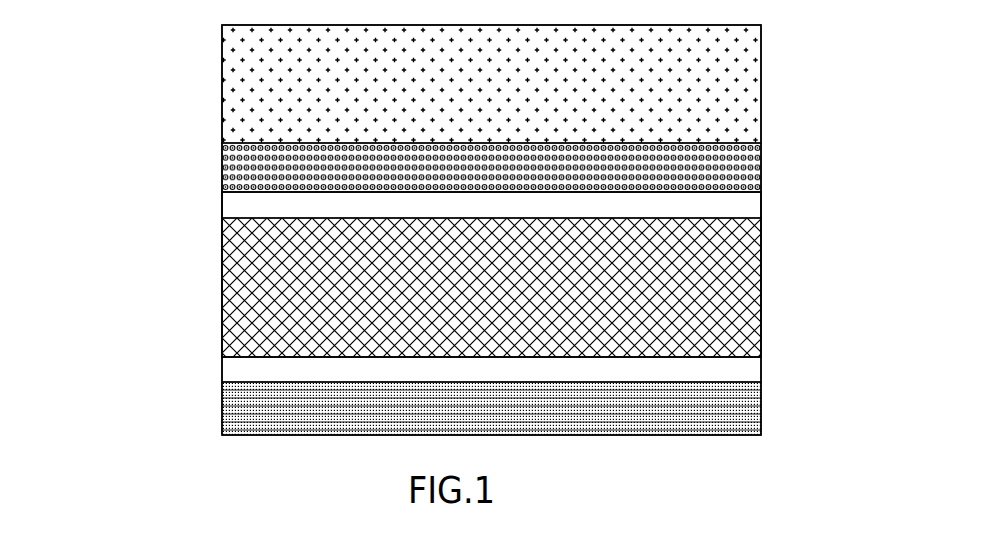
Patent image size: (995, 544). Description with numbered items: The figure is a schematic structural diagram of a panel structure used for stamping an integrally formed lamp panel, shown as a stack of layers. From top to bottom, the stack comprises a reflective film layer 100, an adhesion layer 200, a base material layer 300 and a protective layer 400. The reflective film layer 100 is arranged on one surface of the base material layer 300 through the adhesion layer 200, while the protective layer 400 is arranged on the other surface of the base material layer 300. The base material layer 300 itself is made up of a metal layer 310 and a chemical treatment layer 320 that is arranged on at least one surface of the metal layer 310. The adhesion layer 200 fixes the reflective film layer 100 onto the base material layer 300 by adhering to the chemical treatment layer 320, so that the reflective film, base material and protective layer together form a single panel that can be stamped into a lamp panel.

The reflective film layer 100 is at (748, 106).
The adhesion layer 200 is at (762, 170).
The base material layer 300 is at (95, 178).
The metal layer 310 is at (223, 297).
The chemical treatment layer 320 is at (223, 210).
The protective layer 400 is at (748, 412).